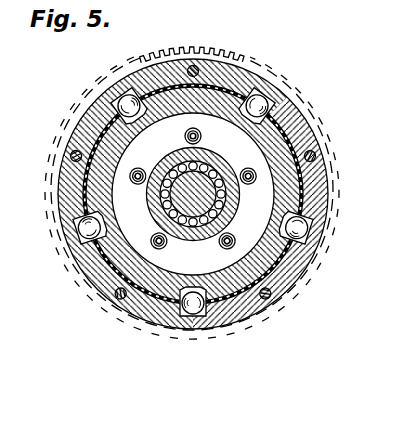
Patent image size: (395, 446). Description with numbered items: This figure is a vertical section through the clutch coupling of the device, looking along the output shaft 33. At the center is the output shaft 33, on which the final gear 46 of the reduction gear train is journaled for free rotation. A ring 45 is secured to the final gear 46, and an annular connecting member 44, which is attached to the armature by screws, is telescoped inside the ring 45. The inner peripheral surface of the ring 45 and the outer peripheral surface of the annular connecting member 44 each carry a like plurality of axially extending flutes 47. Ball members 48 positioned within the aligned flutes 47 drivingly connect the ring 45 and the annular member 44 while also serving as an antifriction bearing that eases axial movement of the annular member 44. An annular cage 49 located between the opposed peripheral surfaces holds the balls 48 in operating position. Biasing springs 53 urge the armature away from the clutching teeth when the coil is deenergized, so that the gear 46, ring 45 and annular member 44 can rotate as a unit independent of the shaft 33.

The output shaft 33 is at (201, 186).
The annular connecting member 44 is at (327, 196).
The ring 45 is at (325, 137).
The final gear 46 is at (220, 53).
The flutes 47 is at (75, 231).
The ball members 48 is at (120, 98).
The annular cage 49 is at (82, 190).
The biasing springs 53 is at (139, 170).